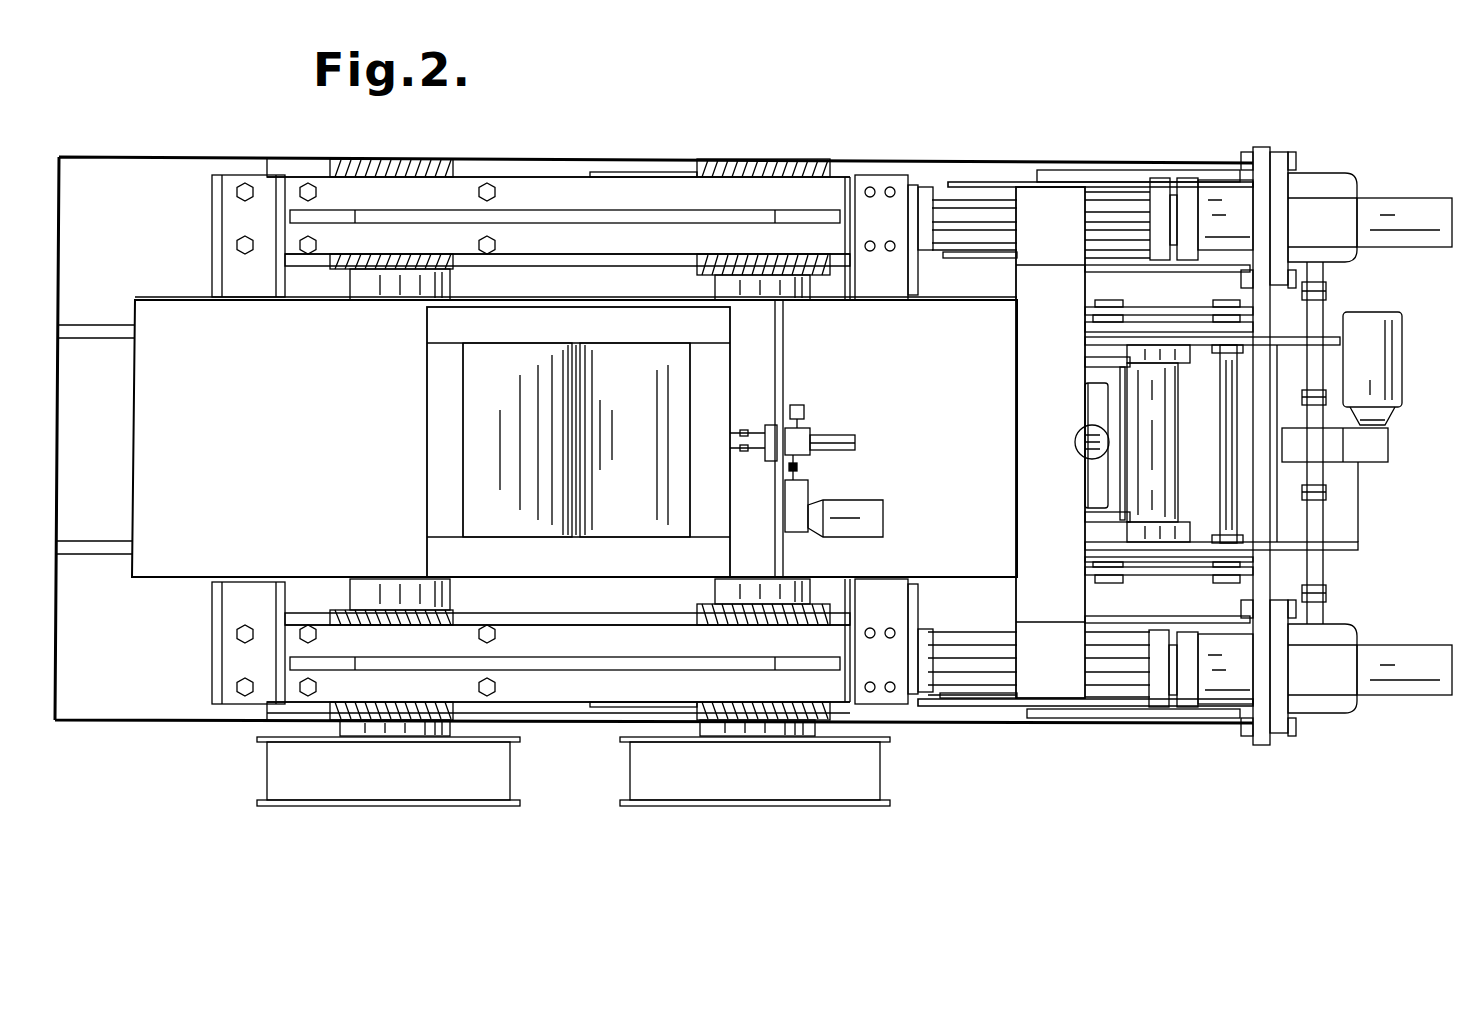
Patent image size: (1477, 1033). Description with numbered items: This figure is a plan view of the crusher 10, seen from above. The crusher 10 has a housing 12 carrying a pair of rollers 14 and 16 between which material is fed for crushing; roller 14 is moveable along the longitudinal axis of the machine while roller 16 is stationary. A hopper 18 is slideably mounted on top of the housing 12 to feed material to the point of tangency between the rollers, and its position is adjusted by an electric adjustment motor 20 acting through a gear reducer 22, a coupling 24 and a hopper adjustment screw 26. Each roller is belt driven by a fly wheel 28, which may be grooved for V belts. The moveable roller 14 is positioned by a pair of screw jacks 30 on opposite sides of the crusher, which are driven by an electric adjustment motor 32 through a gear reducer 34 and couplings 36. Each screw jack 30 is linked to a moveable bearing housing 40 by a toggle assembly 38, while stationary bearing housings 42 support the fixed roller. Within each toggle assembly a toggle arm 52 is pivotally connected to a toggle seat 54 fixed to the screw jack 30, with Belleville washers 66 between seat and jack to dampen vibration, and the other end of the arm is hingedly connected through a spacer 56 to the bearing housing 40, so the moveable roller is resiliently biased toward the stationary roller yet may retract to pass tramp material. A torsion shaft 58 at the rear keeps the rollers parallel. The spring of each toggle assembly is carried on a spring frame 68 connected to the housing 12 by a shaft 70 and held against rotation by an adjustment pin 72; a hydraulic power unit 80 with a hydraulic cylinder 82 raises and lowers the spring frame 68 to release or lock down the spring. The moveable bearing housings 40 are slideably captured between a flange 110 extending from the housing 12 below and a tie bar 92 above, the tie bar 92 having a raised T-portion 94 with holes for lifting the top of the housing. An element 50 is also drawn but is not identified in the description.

The crusher 10 is at (1010, 125).
The housing 12 is at (155, 470).
The roller 14 is at (628, 365).
The roller 16 is at (528, 380).
The hopper 18 is at (445, 372).
The electric adjustment motor 20 is at (885, 520).
The gear reducer 22 is at (815, 510).
The coupling 24 is at (808, 467).
The hopper adjustment screw 26 is at (815, 436).
The fly wheel 28 is at (352, 810).
The screw jack 30 is at (1315, 175).
The electric adjustment motor 32 is at (1375, 320).
The gear reducer 34 is at (1370, 460).
The drive shaft 36 is at (1330, 595).
The toggle assembly 38 is at (986, 184).
The bearing housing 40 is at (795, 177).
The bearing housing 42 is at (432, 168).
The stationary platen 50 is at (1028, 548).
The toggle arm 52 is at (1128, 685).
The toggle seat 54 is at (1160, 190).
The spacer 56 is at (940, 695).
The torsion shaft 58 is at (1135, 405).
The Belleville washers 66 is at (1172, 190).
The spring frame 68 is at (1175, 315).
The shaft 70 is at (1225, 478).
The adjustment pin 72 is at (1095, 302).
The hydraulic power unit 80 is at (1100, 392).
The hydraulic cylinder 82 is at (1092, 462).
The tie bar 92 is at (543, 188).
The raised T-portion 94 is at (602, 218).
The flange 110 is at (130, 175).